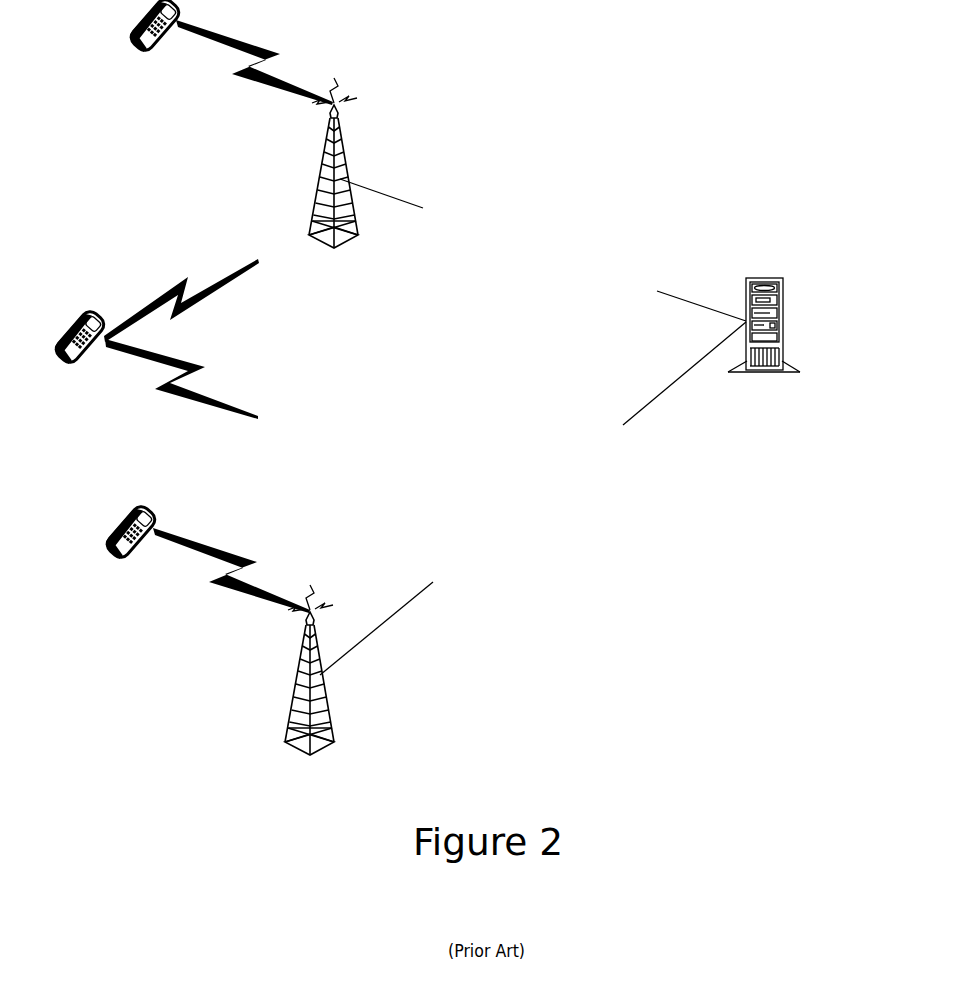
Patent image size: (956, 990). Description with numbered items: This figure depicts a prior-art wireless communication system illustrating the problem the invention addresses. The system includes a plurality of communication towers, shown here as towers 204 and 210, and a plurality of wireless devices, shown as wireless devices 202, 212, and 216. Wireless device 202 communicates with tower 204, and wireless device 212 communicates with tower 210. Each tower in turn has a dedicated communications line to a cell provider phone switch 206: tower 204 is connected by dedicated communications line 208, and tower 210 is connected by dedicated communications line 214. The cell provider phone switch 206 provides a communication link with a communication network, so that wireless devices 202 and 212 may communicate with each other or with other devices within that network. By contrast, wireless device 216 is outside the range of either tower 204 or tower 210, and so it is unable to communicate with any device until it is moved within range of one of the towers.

The wireless device 202 is at (169, 75).
The tower 204 is at (350, 275).
The cell provider phone switch 206 is at (781, 391).
The dedicated communications line 208 is at (543, 250).
The tower 210 is at (328, 780).
The wireless device 212 is at (146, 580).
The dedicated communications line 214 is at (533, 498).
The wireless device 216 is at (96, 389).